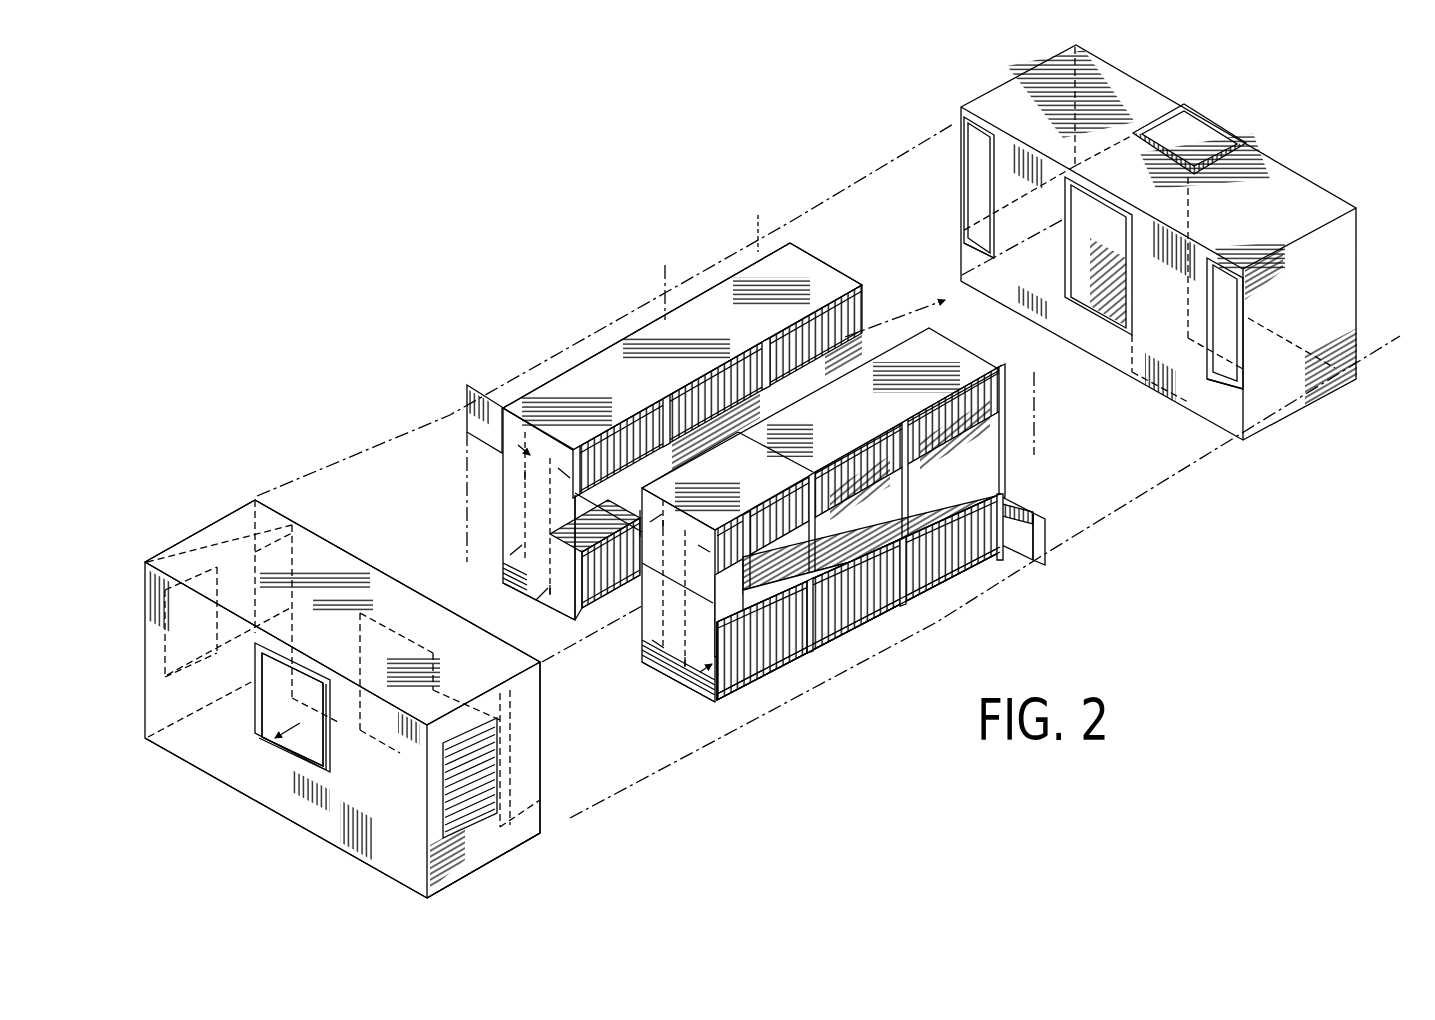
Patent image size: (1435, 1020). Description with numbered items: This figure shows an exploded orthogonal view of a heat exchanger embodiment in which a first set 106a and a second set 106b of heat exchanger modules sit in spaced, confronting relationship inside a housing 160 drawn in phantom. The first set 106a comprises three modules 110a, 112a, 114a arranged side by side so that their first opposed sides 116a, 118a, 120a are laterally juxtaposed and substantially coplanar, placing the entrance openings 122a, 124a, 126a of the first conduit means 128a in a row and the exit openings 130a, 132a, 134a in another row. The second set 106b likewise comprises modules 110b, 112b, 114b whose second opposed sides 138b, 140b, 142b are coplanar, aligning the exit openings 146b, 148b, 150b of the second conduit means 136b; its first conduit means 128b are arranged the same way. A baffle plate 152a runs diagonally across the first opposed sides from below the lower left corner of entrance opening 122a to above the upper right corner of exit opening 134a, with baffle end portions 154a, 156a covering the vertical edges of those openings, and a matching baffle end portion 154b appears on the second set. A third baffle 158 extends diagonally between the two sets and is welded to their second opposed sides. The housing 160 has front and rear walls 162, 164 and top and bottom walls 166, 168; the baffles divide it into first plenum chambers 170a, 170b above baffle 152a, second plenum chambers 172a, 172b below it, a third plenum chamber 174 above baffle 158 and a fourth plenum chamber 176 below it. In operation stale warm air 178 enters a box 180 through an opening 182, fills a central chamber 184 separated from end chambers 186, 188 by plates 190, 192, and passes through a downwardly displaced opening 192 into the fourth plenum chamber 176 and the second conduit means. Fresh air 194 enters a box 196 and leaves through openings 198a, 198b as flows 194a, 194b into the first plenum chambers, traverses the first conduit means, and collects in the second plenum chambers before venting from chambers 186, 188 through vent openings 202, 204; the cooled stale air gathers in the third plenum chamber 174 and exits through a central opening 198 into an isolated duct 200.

The first set of heat exchanger modules 106a is at (870, 641).
The second set of heat exchanger modules 106b is at (600, 328).
The module 110a is at (770, 690).
The module 110b is at (512, 368).
The module 112a is at (902, 620).
The module 112b is at (633, 320).
The module 114a is at (965, 570).
The module 114b is at (728, 252).
The first opposed side 116a is at (695, 682).
The first opposed side 118a is at (900, 470).
The first opposed side 120a is at (988, 461).
The entrance opening 122a is at (773, 528).
The entrance opening 124a is at (832, 480).
The entrance opening 126a is at (985, 397).
The first conduit means 128a is at (705, 700).
The first conduit means 128b is at (510, 562).
The exit opening 130a is at (722, 712).
The exit opening 132a is at (810, 656).
The exit opening 134a is at (935, 566).
The second conduit means 136b is at (548, 577).
The second opposed side 138b is at (578, 615).
The second opposed side 140b is at (700, 400).
The second opposed side 142b is at (845, 290).
The exit opening 146b is at (620, 420).
The exit opening 148b is at (725, 368).
The exit opening 150b is at (808, 300).
The baffle plate 152a is at (1012, 500).
The baffle end portion 154a is at (730, 532).
The baffle end portion 154b is at (462, 441).
The baffle end portion 156a is at (1027, 560).
The third baffle 158 is at (575, 493).
The housing 160 is at (757, 215).
The front wall 162 is at (1022, 430).
The rear wall 164 is at (545, 345).
The top wall 166 is at (1047, 356).
The bottom wall 168 is at (872, 668).
The first plenum chamber 170a is at (928, 477).
The first plenum chamber 170b is at (665, 268).
The second plenum chamber 172a is at (795, 670).
The second plenum chamber 172b is at (490, 492).
The third plenum chamber 174 is at (625, 512).
The fourth plenum chamber 176 is at (620, 638).
The stale warm air 178 is at (254, 737).
The box 180 is at (478, 878).
The opening 182 is at (322, 742).
The central chamber 184 is at (296, 745).
The end chamber 186 is at (545, 800).
The end chamber 188 is at (178, 545).
The plate 190 is at (520, 852).
The opening 192 is at (205, 565).
The fresh air 194 is at (1196, 144).
The fresh air flow 194a is at (1178, 355).
The fresh air flow 194b is at (946, 205).
The box 196 is at (1362, 250).
The central opening 198 is at (1113, 327).
The opening 198a is at (1222, 383).
The opening 198b is at (964, 168).
The duct 200 is at (1192, 218).
The vent opening 202 is at (443, 798).
The vent opening 204 is at (143, 657).